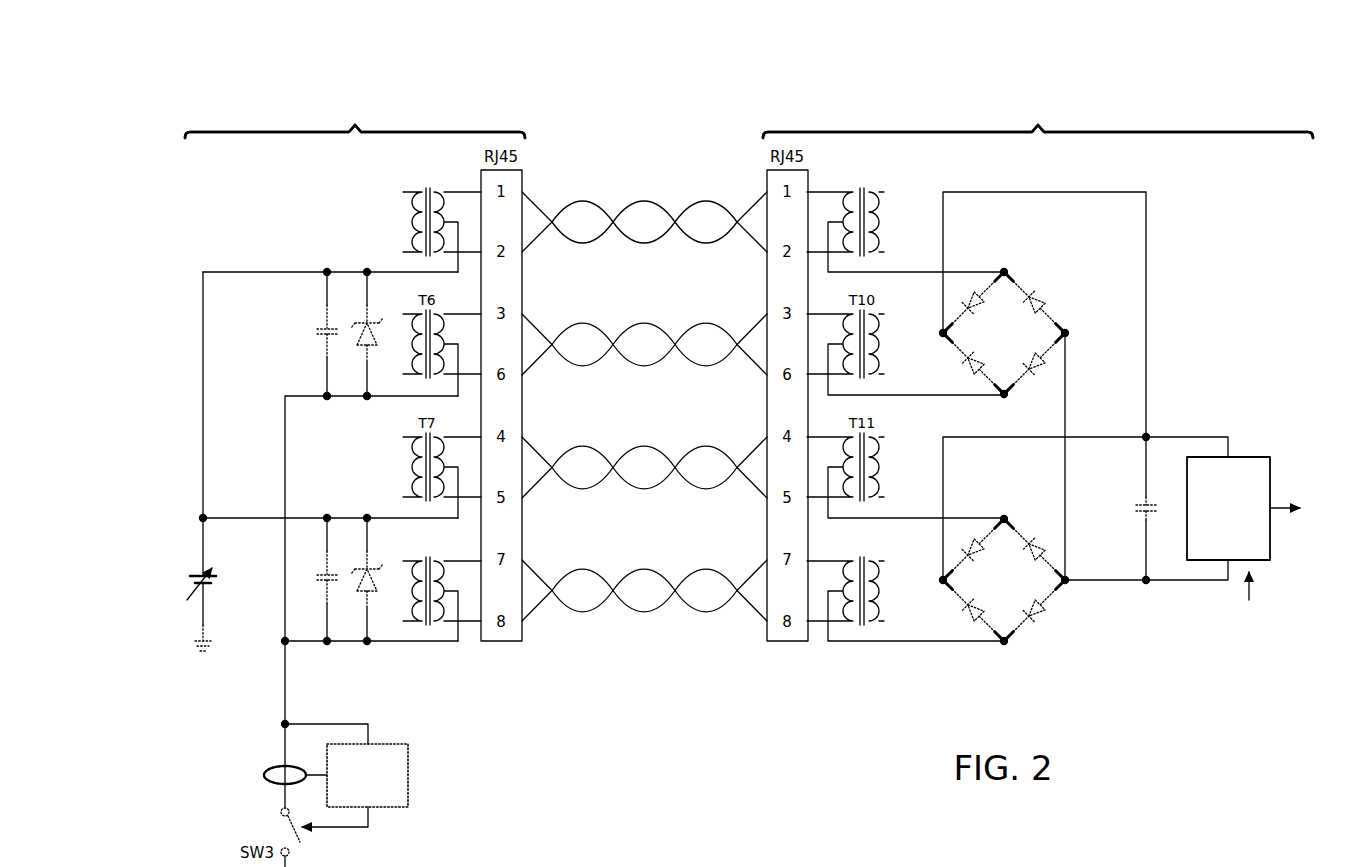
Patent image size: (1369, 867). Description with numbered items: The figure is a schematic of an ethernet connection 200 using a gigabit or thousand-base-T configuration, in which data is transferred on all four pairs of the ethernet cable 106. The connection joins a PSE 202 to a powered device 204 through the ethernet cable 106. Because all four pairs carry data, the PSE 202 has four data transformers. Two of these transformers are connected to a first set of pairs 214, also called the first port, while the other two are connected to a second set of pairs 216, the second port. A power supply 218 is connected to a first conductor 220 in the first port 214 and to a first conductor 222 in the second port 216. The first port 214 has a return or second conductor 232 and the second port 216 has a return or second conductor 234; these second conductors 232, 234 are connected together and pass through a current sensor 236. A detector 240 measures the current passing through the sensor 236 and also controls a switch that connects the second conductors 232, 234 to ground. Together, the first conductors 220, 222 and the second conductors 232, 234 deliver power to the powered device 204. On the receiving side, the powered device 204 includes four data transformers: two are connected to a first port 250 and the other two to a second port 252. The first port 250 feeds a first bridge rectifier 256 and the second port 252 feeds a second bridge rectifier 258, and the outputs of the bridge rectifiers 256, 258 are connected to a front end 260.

The ethernet connection 200 is at (477, 106).
The PSE 202 is at (355, 107).
The powered device 204 is at (1038, 107).
The ethernet cable 106 is at (632, 176).
The first set of pairs 214 is at (386, 208).
The second set of pairs 216 is at (412, 654).
The power supply 218 is at (190, 580).
The first conductor 220 is at (262, 270).
The first conductor 222 is at (347, 516).
The second conductor 232 is at (283, 458).
The second conductor 234 is at (349, 644).
The current sensor 236 is at (272, 783).
The detector 240 is at (352, 789).
The first port 250 is at (903, 208).
The second port 252 is at (874, 655).
The first bridge rectifier 256 is at (1059, 281).
The second bridge rectifier 258 is at (1058, 635).
The front end 260 is at (1240, 455).